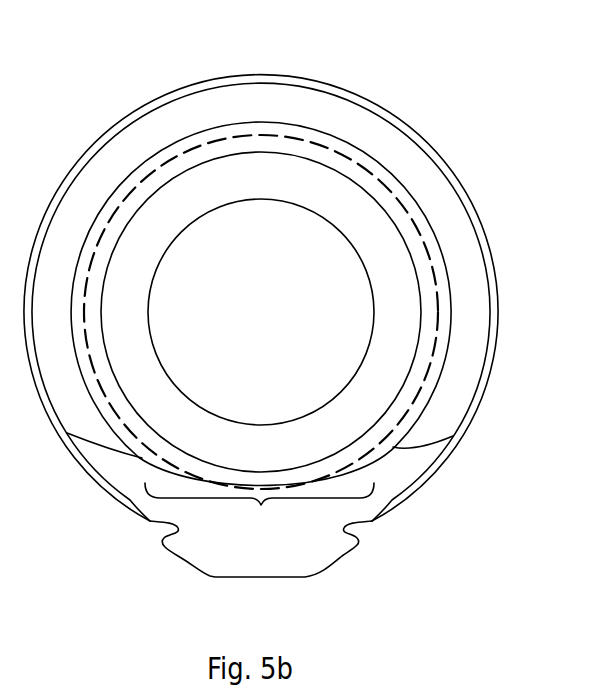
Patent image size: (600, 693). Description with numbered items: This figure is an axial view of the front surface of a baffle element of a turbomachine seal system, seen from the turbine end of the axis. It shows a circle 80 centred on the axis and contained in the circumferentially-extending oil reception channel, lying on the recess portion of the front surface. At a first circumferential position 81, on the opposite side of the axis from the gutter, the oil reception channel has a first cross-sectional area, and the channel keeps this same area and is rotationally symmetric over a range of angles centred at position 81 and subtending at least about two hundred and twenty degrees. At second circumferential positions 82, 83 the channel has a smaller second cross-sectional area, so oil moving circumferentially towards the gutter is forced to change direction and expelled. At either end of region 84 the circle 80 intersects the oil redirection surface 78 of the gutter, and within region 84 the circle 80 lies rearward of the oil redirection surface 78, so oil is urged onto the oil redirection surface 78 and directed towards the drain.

The oil redirection surface 78 is at (315, 553).
The circle 80 is at (361, 173).
The first circumferential position 81 is at (199, 149).
The second circumferential position 82 is at (147, 421).
The second circumferential position 83 is at (430, 447).
The region 84 is at (261, 505).